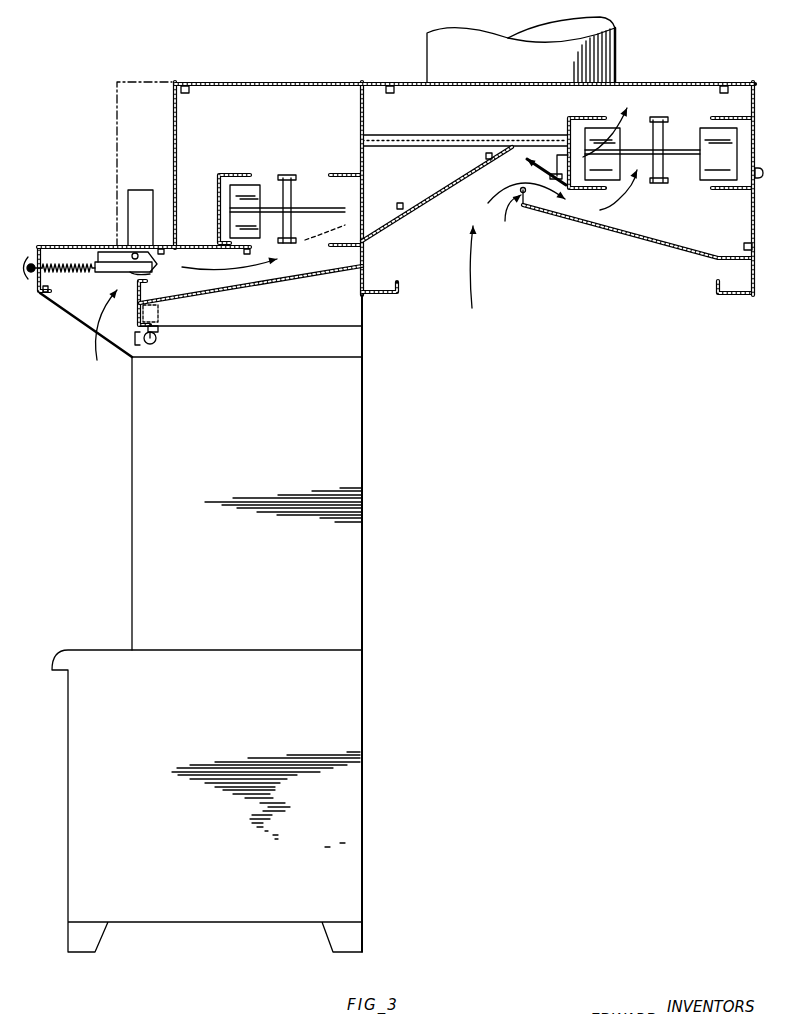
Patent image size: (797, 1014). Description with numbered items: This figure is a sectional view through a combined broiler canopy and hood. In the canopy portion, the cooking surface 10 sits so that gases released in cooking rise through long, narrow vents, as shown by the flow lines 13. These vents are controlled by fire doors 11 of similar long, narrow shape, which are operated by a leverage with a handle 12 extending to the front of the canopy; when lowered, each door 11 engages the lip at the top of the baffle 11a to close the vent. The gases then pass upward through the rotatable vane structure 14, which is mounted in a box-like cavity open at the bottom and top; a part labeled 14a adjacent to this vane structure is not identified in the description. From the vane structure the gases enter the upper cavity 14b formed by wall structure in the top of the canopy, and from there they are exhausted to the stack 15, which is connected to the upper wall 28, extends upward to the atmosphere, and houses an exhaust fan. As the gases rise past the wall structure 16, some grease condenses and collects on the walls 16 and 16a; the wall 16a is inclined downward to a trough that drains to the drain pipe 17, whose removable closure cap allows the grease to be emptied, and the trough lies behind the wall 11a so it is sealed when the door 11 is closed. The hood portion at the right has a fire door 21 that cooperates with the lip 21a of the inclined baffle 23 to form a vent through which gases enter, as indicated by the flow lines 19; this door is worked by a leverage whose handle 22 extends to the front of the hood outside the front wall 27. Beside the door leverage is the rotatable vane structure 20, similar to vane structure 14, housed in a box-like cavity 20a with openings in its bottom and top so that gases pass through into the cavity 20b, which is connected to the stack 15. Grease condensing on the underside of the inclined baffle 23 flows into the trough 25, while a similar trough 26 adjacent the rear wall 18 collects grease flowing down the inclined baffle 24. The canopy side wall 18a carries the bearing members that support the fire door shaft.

The cooking surface 10 is at (108, 648).
The fire door 11 is at (140, 252).
The baffle 11a is at (141, 287).
The handle 12 is at (27, 282).
The flow lines 13 is at (104, 308).
The rotatable vane structure 14 is at (345, 214).
The roller 14a is at (230, 175).
The upper cavity 14b is at (322, 125).
The stack 15 is at (432, 48).
The wall structure 16 is at (210, 251).
The inclined wall 16a is at (240, 289).
The drain pipe 17 is at (158, 338).
The rear wall 18 is at (358, 428).
The canopy side wall 18a is at (131, 498).
The flow lines 19 is at (471, 270).
The rotatable vane structure 20 is at (678, 152).
The box-like cavity 20a is at (605, 134).
The cavity 20b is at (572, 118).
The fire door 21 is at (547, 160).
The lip 21a is at (514, 212).
The handle 22 is at (762, 178).
The inclined baffle 23 is at (605, 228).
The inclined baffle 24 is at (433, 193).
The trough 25 is at (716, 284).
The trough 26 is at (400, 287).
The front wall 27 is at (754, 230).
The upper wall 28 is at (665, 84).